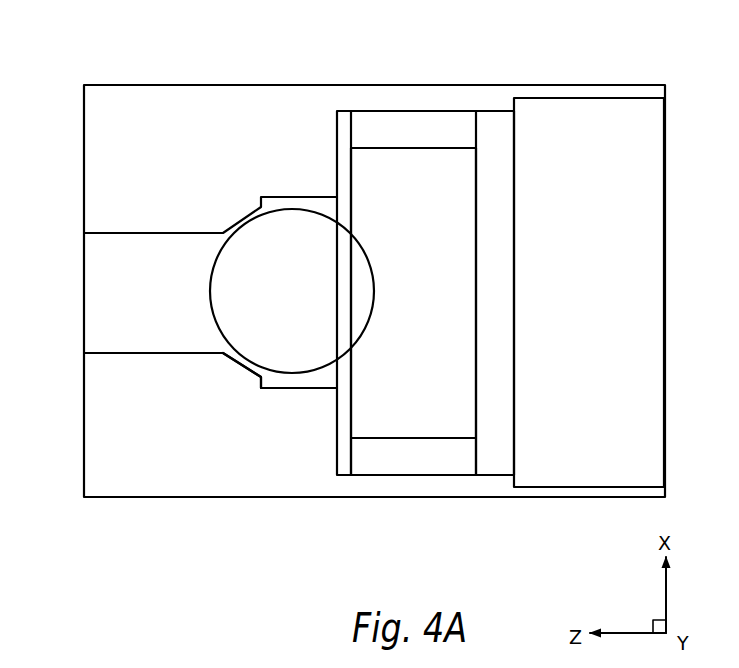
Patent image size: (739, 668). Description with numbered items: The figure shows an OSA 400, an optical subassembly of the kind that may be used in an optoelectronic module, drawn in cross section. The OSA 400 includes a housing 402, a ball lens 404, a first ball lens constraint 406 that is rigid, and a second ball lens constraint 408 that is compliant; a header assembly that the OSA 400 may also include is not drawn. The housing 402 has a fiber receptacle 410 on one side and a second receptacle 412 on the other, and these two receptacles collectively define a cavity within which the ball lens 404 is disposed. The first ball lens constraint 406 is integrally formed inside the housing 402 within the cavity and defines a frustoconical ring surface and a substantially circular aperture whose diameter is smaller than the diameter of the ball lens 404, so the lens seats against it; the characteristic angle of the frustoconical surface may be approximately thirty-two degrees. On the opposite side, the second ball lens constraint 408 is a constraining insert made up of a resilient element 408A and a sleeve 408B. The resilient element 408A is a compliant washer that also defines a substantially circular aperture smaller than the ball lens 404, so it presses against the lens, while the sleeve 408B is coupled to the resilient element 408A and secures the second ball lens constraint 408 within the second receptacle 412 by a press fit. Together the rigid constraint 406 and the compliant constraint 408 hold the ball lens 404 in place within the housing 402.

The OSA 400 is at (620, 70).
The housing 402 is at (193, 85).
The ball lens 404 is at (308, 306).
The first ball lens constraint 406 is at (245, 360).
The second ball lens constraint 408 is at (421, 352).
The resilient element 408A is at (350, 412).
The sleeve 408B is at (413, 483).
The fiber receptacle 410 is at (145, 303).
The second receptacle 412 is at (595, 326).